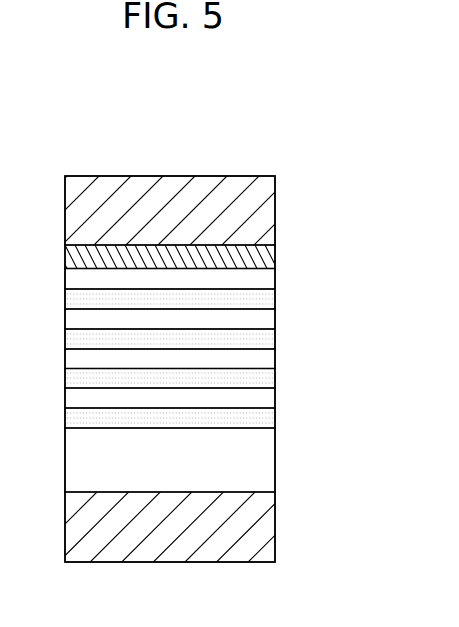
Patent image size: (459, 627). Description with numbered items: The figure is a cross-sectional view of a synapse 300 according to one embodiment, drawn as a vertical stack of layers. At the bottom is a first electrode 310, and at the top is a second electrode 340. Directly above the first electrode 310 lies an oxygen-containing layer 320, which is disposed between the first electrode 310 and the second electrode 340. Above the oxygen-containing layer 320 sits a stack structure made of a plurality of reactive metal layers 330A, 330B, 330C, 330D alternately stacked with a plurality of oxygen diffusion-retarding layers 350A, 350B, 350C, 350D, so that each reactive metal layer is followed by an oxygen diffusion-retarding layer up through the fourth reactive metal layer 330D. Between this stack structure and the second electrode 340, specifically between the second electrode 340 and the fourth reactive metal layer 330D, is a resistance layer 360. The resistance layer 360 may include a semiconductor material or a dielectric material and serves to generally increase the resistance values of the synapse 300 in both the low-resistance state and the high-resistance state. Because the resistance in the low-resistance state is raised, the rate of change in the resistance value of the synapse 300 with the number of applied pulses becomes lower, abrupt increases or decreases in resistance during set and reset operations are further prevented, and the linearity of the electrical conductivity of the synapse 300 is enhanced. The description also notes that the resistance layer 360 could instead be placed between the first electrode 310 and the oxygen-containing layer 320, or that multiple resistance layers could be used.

The synapse 300 is at (245, 164).
The first electrode 310 is at (265, 526).
The oxygen-containing layer 320 is at (265, 461).
The first reactive metal layer 330A is at (264, 398).
The second reactive metal layer 330B is at (264, 358).
The third reactive metal layer 330C is at (264, 318).
The fourth reactive metal layer 330D is at (264, 277).
The first oxygen diffusion-retarding layer 350A is at (264, 418).
The second oxygen diffusion-retarding layer 350B is at (264, 378).
The third oxygen diffusion-retarding layer 350C is at (264, 339).
The fourth oxygen diffusion-retarding layer 350D is at (264, 299).
The second electrode 340 is at (265, 209).
The resistance layer 360 is at (266, 255).